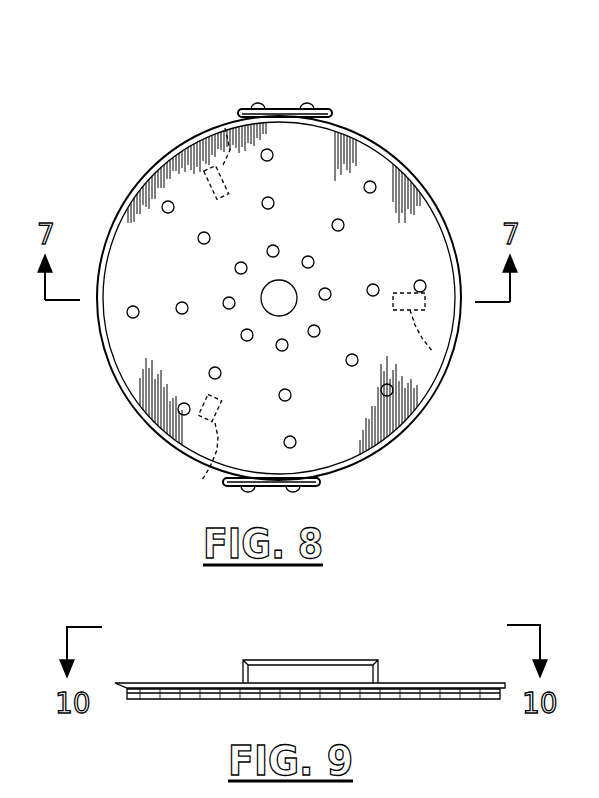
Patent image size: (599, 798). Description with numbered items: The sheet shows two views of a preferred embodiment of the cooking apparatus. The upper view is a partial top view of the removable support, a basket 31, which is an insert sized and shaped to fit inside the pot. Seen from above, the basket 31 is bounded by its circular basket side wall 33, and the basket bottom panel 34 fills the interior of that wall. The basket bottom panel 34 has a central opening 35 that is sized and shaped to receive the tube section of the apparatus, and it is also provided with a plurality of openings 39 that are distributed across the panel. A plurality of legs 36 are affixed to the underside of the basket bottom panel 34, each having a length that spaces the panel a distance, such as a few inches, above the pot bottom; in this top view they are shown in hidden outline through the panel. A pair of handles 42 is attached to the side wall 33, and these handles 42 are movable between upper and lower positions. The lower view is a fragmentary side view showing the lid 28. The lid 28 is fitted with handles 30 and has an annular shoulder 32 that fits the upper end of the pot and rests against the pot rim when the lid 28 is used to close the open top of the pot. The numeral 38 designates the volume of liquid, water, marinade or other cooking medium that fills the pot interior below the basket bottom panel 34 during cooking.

In FIG. 8, the basket 31 is at (147, 40).
In FIG. 8, the basket side wall 33 is at (378, 150).
In FIG. 8, the basket bottom panel 34 is at (425, 258).
In FIG. 8, the central opening 35 is at (297, 300).
In FIG. 8, the legs 36 is at (225, 128).
In FIG. 8, the openings 39 is at (272, 199).
In FIG. 8, the handles 42 is at (282, 108).
In FIG. 9, the lid 28 is at (462, 608).
In FIG. 9, the handles 30 is at (352, 660).
In FIG. 9, the annular shoulder 32 is at (503, 700).
In FIG. 9, the volume of liquid 38 is at (156, 697).